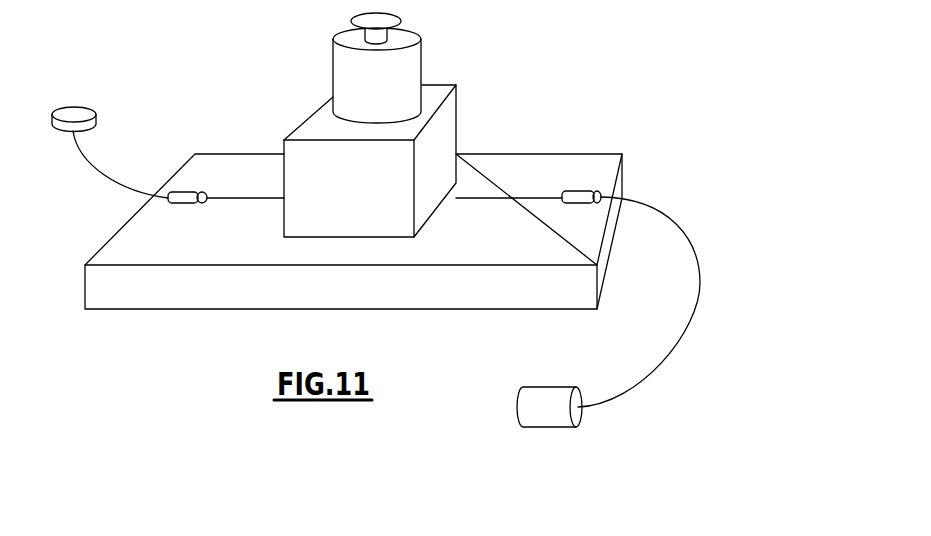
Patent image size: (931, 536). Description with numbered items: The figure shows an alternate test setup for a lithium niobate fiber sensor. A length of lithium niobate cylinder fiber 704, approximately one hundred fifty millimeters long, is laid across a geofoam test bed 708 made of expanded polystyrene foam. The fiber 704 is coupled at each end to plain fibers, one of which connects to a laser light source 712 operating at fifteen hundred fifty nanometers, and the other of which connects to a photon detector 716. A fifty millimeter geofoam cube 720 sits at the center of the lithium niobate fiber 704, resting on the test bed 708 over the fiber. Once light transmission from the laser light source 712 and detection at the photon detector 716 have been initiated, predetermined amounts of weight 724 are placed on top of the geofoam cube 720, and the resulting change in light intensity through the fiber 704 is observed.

The lithium niobate cylinder fiber 704 is at (498, 184).
The geofoam test bed 708 is at (258, 297).
The laser light source 712 is at (547, 428).
The photon detector 716 is at (66, 116).
The geofoam cube 720 is at (297, 188).
The weight 724 is at (332, 60).